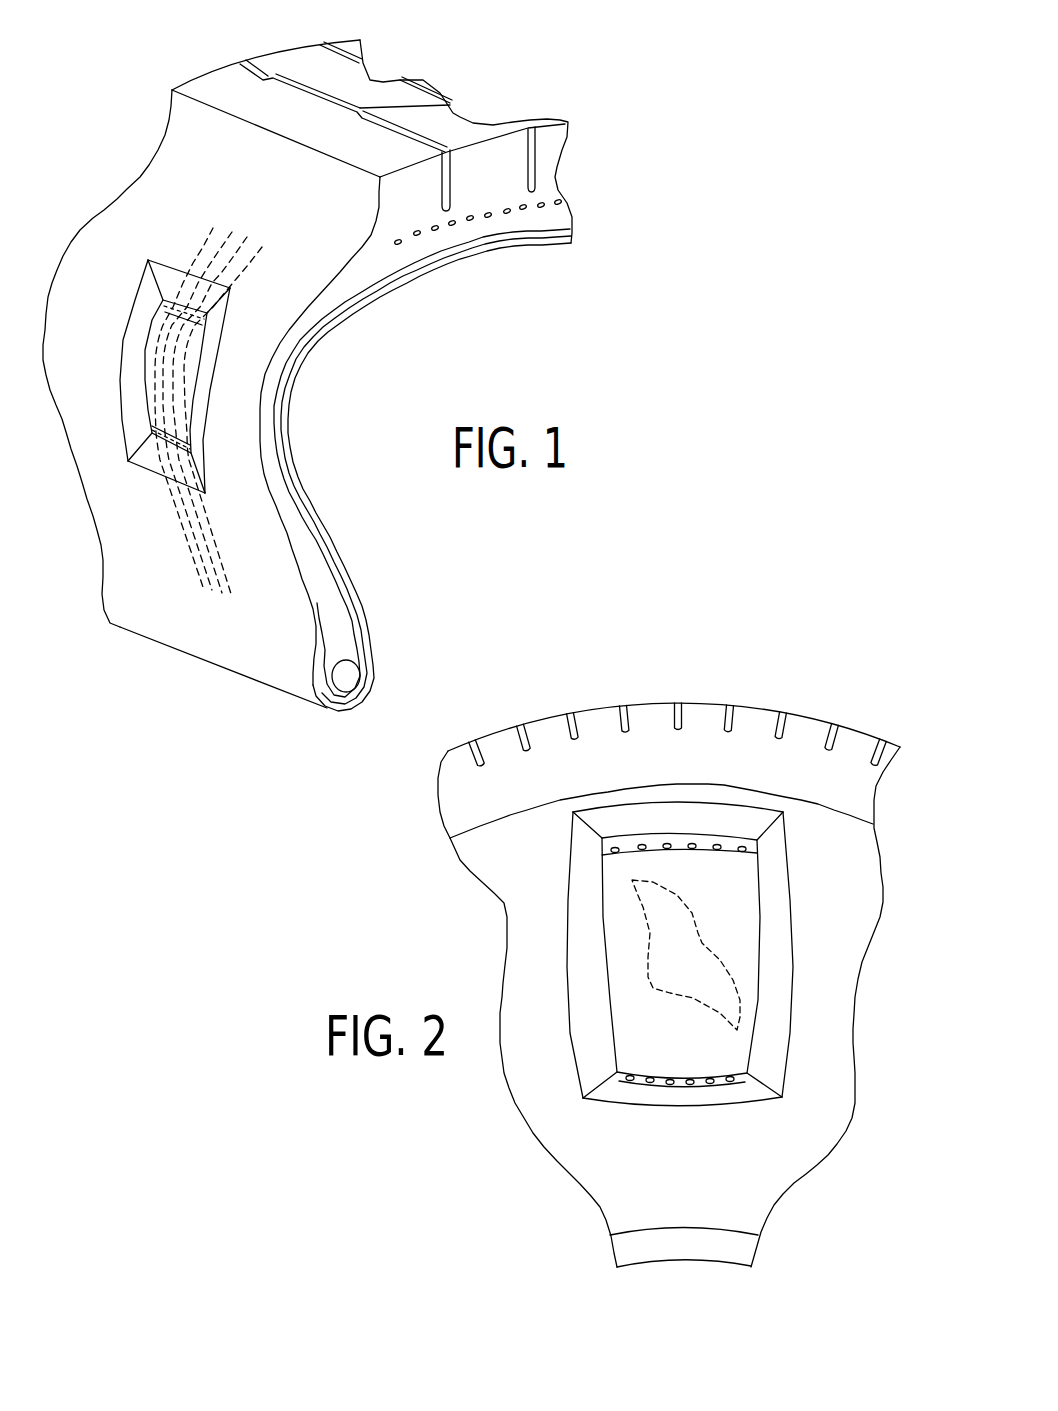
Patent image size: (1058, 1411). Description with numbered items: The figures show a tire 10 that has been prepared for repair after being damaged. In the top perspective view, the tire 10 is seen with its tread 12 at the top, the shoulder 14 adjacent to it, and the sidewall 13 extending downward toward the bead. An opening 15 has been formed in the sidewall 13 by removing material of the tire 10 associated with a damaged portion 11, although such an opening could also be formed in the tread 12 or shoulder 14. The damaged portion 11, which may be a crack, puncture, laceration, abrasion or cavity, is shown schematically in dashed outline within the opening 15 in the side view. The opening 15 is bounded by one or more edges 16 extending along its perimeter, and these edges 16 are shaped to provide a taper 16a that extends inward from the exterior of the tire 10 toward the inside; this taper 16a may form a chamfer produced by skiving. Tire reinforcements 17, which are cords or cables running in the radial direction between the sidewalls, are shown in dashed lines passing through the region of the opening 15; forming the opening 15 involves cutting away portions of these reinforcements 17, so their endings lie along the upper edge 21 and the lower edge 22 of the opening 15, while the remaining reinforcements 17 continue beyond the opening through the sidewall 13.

In FIG. 1, the tire 10 is at (122, 90).
In FIG. 2, the tire 10 is at (867, 687).
In FIG. 2, the damaged portion 11 is at (702, 943).
In FIG. 1, the tread 12 is at (550, 158).
In FIG. 2, the tread 12 is at (652, 708).
In FIG. 1, the sidewall 13 is at (240, 400).
In FIG. 2, the sidewall 13 is at (530, 953).
In FIG. 1, the shoulder 14 is at (213, 180).
In FIG. 2, the shoulder 14 is at (457, 817).
In FIG. 1, the opening 15 is at (134, 336).
In FIG. 2, the opening 15 is at (620, 1014).
In FIG. 1, the edge 16 is at (122, 365).
In FIG. 2, the edge 16 is at (565, 908).
In FIG. 2, the taper 16a is at (703, 817).
In FIG. 1, the tire reinforcements 17 is at (208, 223).
In FIG. 1, the upper edge 21 is at (163, 258).
In FIG. 2, the upper edge 21 is at (765, 810).
In FIG. 1, the lower edge 22 is at (134, 470).
In FIG. 2, the lower edge 22 is at (702, 1108).